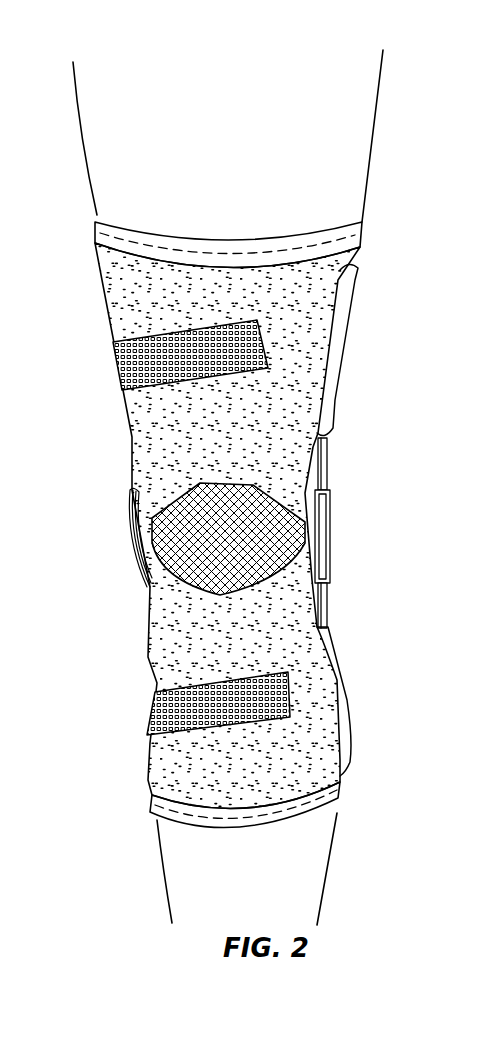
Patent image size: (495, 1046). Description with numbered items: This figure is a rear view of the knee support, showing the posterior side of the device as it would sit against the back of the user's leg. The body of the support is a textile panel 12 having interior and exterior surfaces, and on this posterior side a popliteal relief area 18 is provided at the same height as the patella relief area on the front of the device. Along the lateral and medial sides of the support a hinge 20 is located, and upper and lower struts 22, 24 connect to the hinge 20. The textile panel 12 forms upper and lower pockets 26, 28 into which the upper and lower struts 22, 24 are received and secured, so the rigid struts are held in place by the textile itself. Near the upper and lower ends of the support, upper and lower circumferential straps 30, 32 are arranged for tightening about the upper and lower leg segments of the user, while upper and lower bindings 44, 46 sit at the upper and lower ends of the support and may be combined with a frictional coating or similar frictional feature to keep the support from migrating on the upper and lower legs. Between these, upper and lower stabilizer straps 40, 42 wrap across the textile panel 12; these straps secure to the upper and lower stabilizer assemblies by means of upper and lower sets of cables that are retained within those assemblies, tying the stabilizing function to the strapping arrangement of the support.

The textile panel 12 is at (180, 442).
The popliteal relief area 18 is at (257, 537).
The hinge 20 is at (130, 528).
The upper strut 22 is at (323, 472).
The lower strut 24 is at (325, 607).
The upper pocket 26 is at (338, 327).
The lower pocket 28 is at (348, 705).
The upper circumferential strap 30 is at (357, 250).
The lower circumferential strap 32 is at (343, 803).
The upper stabilizer strap 40 is at (125, 363).
The lower stabilizer strap 42 is at (168, 700).
The upper binding 44 is at (293, 248).
The lower binding 46 is at (285, 812).